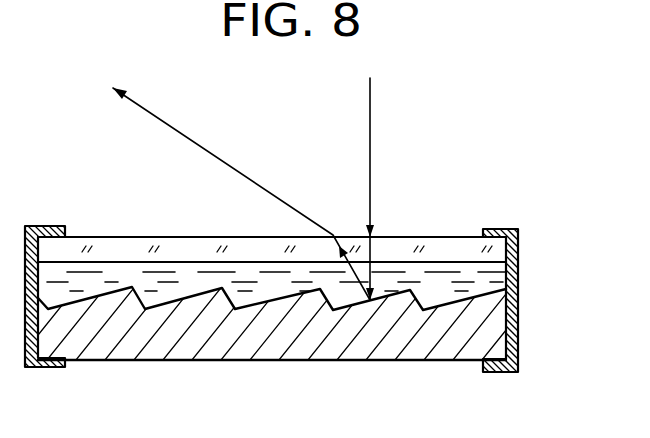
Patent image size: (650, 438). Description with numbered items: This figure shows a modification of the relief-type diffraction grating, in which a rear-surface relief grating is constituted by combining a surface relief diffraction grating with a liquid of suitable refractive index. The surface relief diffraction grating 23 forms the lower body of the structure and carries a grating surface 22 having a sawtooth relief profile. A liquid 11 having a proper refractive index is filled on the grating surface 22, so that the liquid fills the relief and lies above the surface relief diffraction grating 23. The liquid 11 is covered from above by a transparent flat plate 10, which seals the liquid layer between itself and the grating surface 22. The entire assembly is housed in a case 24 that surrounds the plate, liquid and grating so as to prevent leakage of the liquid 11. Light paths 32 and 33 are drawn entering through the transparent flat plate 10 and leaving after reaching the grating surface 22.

The transparent flat plate 10 is at (445, 248).
The liquid 11 is at (522, 262).
The grating surface 22 is at (506, 302).
The surface relief diffraction grating 23 is at (415, 351).
The case 24 is at (515, 352).
The incident light 32 is at (370, 122).
The reflected light 33 is at (242, 175).